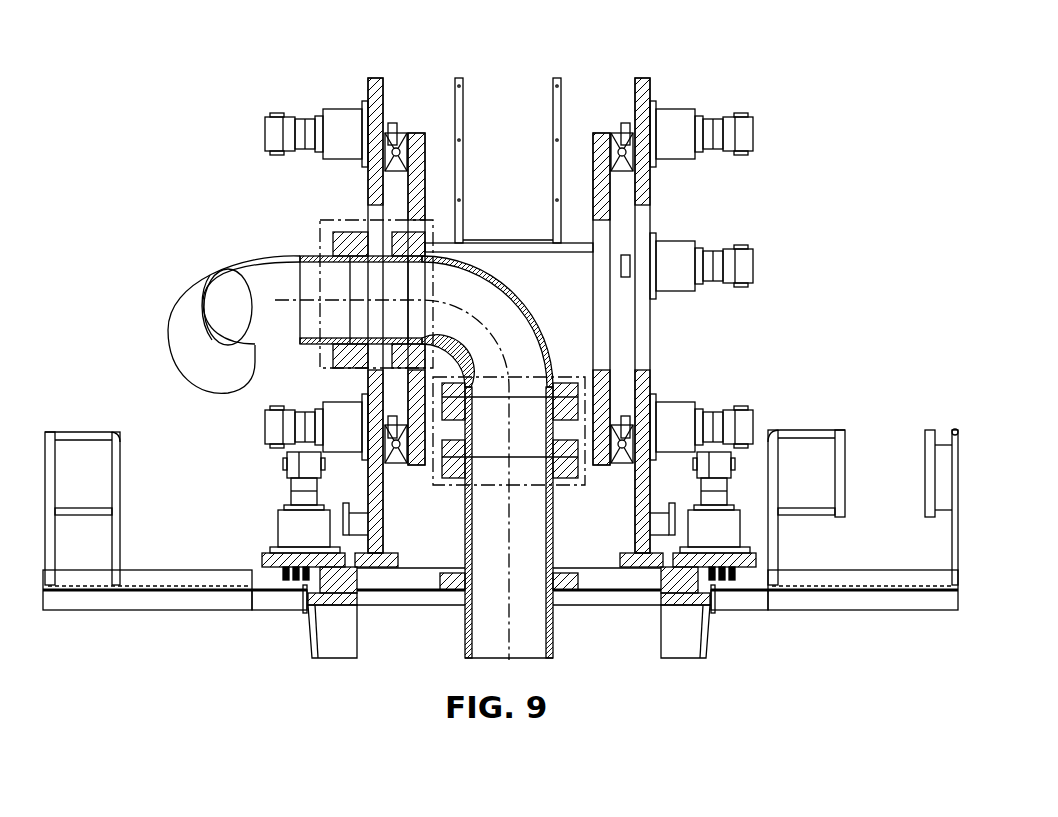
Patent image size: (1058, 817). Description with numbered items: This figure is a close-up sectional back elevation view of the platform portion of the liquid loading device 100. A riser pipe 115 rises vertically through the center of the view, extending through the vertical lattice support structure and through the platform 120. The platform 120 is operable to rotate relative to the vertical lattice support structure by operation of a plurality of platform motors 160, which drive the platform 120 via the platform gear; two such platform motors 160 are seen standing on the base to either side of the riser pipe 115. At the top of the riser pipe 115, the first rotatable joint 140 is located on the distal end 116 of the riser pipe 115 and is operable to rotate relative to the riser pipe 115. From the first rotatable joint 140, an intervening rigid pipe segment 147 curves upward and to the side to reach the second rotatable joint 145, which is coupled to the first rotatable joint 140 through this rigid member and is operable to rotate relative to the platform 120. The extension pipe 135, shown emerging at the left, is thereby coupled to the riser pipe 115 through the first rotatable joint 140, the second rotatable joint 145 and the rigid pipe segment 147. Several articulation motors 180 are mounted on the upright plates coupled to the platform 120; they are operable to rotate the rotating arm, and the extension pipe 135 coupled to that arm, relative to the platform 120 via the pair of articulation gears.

The rotary coupling assembly 100 is at (532, 80).
The riser pipe 115 is at (470, 618).
The distal end 116 is at (562, 493).
The platform 120 is at (365, 600).
The extension pipe 135 is at (190, 392).
The first rotatable joint 140 is at (537, 430).
The second rotatable joint 145 is at (368, 270).
The rigid pipe segment 147 is at (503, 308).
The platform motors 160 is at (290, 525).
The articulation motors 180 is at (312, 124).